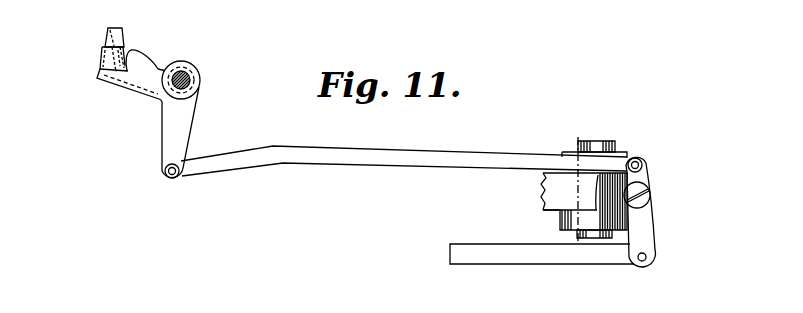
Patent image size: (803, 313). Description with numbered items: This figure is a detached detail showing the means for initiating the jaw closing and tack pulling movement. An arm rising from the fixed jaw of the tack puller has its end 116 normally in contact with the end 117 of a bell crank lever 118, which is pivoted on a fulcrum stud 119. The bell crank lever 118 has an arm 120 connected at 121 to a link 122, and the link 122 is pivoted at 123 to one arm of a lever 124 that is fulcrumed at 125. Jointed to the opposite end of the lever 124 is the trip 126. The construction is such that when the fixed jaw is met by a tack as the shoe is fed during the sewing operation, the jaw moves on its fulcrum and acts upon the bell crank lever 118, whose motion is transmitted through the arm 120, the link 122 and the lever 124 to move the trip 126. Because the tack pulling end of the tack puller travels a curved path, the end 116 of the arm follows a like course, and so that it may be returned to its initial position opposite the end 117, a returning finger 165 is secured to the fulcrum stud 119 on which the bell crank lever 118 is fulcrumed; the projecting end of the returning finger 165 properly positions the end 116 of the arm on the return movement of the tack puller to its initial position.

The end of arm 116 is at (122, 36).
The end of bell crank lever 117 is at (112, 60).
The bell crank lever 118 is at (120, 78).
The returning finger 165 is at (140, 56).
The fulcrum stud 119 is at (191, 78).
The arm of bell crank lever 120 is at (183, 123).
The connection 121 is at (175, 174).
The link 122 is at (342, 158).
The pivot 123 is at (643, 157).
The lever 124 is at (648, 225).
The fulcrum 125 is at (652, 193).
The trip 126 is at (568, 253).